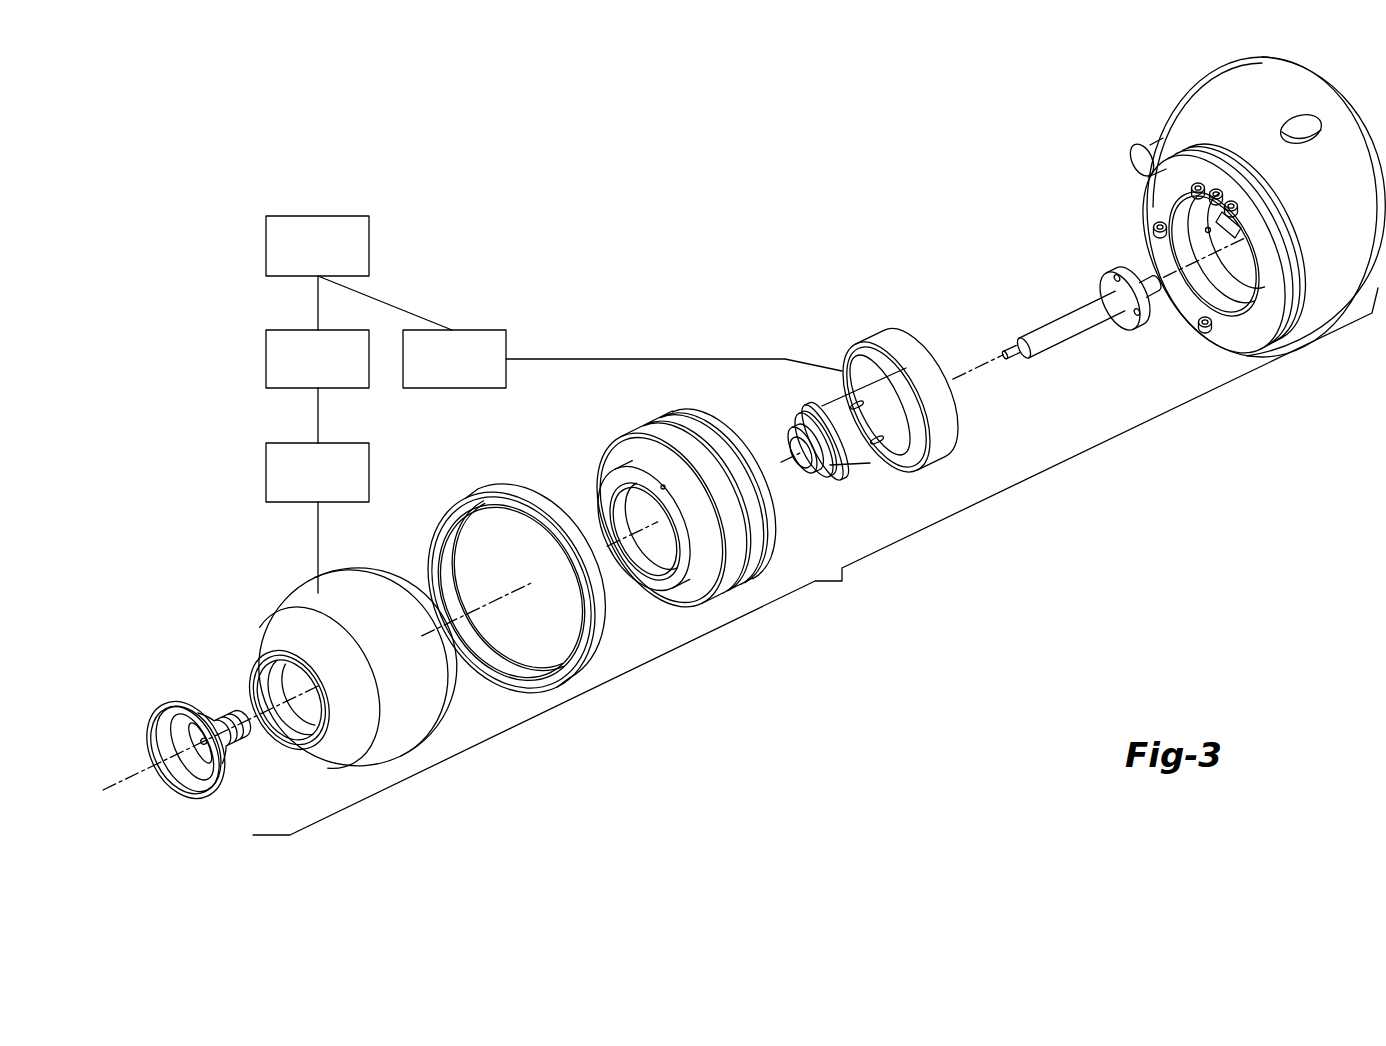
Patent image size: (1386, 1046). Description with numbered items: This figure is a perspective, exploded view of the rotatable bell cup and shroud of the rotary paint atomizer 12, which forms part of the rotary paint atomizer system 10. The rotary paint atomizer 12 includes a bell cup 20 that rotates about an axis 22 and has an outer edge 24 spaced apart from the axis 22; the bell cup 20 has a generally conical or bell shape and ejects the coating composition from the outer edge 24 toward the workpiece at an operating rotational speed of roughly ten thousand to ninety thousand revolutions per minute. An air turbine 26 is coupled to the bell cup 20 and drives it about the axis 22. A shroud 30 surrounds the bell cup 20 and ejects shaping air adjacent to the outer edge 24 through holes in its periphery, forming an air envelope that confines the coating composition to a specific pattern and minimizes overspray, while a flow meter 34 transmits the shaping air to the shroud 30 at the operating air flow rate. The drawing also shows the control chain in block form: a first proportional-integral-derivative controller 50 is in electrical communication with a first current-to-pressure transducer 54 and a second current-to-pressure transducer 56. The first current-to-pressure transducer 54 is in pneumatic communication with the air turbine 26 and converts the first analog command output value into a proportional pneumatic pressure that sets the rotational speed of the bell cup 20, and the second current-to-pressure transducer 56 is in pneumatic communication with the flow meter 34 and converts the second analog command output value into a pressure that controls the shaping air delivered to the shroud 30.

The rotary paint atomizer system 10 is at (815, 561).
The rotary paint atomizer 12 is at (1009, 153).
The bell cup 20 is at (228, 758).
The axis 22 is at (112, 778).
The outer edge 24 is at (153, 712).
The air turbine 26 is at (862, 348).
The shroud 30 is at (297, 612).
The flow meter 34 is at (306, 486).
The first proportional-integral-derivative controller 50 is at (306, 260).
The first current-to-pressure transducer 54 is at (443, 373).
The second current-to-pressure transducer 56 is at (306, 373).